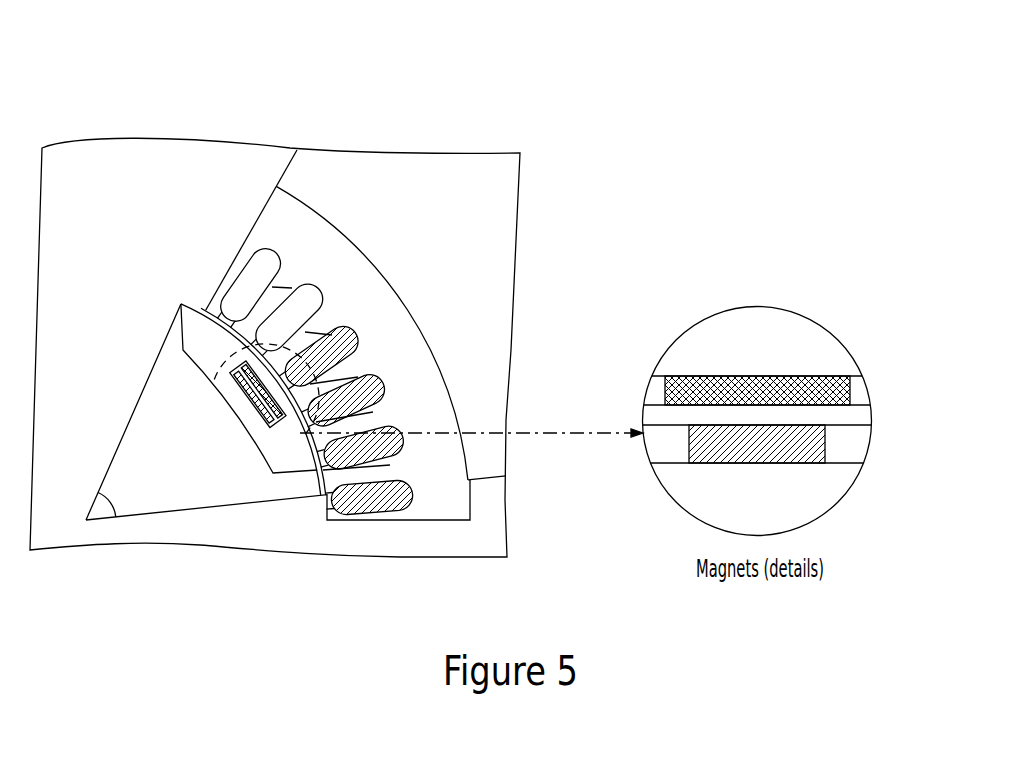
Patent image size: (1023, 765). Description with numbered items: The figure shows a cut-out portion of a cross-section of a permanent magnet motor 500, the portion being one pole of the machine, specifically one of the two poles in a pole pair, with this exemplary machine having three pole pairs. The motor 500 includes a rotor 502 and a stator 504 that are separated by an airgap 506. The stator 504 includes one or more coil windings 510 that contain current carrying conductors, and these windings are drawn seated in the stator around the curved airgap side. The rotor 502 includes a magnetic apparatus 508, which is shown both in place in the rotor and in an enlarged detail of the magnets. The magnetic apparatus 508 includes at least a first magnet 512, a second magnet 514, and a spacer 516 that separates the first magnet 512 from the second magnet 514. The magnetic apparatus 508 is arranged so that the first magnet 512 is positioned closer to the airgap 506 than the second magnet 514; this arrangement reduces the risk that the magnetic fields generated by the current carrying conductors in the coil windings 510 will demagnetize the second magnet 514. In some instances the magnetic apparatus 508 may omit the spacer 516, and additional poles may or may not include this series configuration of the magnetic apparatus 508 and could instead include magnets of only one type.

The permanent magnet motor 500 is at (500, 93).
The rotor 502 is at (163, 503).
The stator 504 is at (447, 412).
The airgap 506 is at (325, 487).
The magnetic apparatus 508 is at (198, 382).
The coil windings 510 is at (363, 340).
The first magnet 512 is at (850, 388).
The second magnet 514 is at (797, 447).
The spacer 516 is at (867, 418).